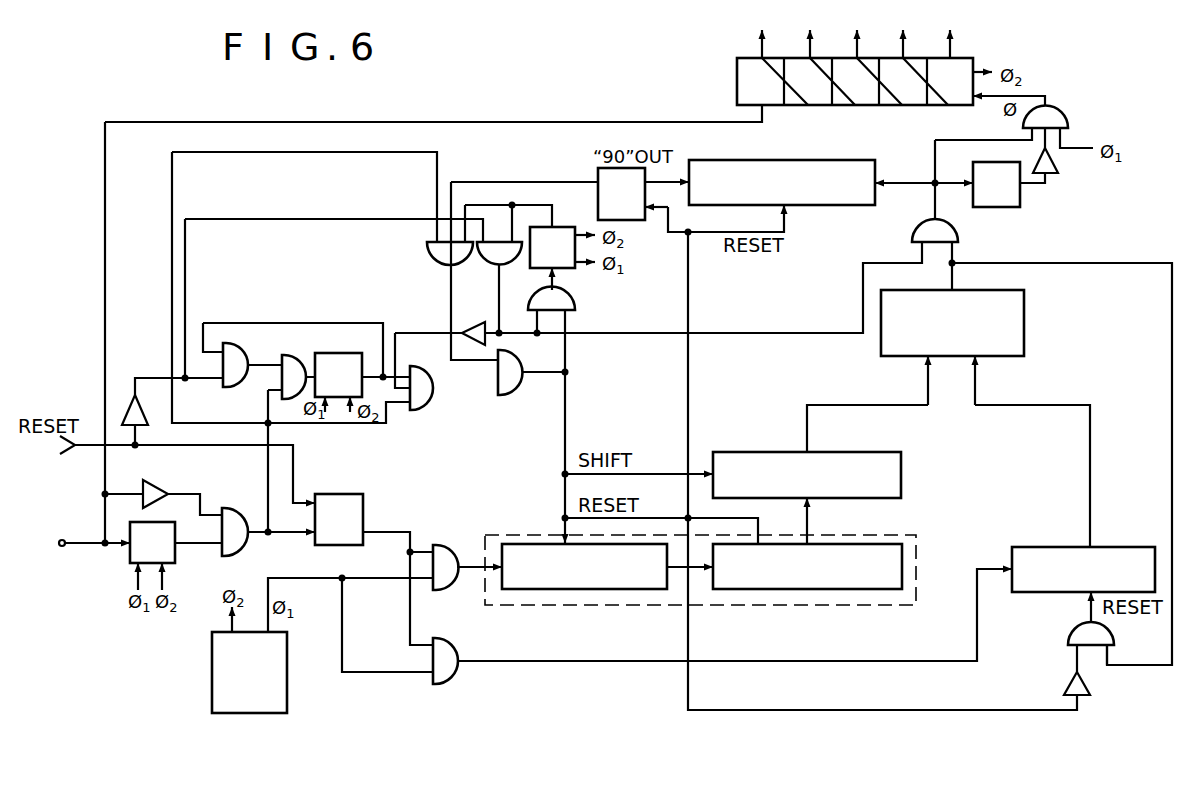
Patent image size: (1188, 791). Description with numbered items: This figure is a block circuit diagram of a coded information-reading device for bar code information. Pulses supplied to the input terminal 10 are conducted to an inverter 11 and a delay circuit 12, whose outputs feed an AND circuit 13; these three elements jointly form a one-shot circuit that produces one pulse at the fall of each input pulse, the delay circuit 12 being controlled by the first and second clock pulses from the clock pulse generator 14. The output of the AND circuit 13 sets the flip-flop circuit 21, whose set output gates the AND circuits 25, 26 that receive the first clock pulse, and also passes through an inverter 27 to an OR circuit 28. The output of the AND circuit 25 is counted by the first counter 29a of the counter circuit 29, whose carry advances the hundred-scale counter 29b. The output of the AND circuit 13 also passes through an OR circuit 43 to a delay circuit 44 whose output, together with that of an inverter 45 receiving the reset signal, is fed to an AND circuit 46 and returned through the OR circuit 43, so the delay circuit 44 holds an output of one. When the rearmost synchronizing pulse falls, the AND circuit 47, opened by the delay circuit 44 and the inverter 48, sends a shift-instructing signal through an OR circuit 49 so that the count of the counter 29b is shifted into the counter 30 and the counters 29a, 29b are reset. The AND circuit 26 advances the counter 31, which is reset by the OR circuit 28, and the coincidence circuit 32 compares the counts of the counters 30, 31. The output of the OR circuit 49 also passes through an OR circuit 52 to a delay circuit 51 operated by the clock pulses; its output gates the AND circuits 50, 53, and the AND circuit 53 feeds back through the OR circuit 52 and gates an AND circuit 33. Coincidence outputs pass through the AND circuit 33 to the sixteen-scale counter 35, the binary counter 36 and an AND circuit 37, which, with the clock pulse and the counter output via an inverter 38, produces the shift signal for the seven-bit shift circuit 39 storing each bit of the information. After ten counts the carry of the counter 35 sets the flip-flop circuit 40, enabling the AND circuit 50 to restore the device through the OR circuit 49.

The input terminal 10 is at (58, 543).
The inverter 11 is at (155, 486).
The delay circuit 12 is at (175, 558).
The AND circuit 13 is at (238, 512).
The clock pulse generator 14 is at (287, 668).
The flip-flop circuit 21 is at (358, 495).
The AND circuit 25 is at (447, 553).
The AND circuit 26 is at (452, 648).
The inverter 27 is at (1090, 684).
The OR circuit 28 is at (1070, 633).
The counter circuit 29 is at (712, 622).
The first counter 29a is at (642, 589).
The 100-scale counter 29b is at (888, 589).
The 100-scale counter 30 is at (901, 477).
The 100-scale counter 31 is at (1045, 547).
The coincidence circuit 32 is at (1024, 333).
The AND circuit 33 is at (928, 223).
The 16-scale counter 35 is at (835, 154).
The binary counter 36 is at (1000, 207).
The AND circuit 37 is at (1060, 114).
The inverter 38 is at (1058, 167).
The 7-bit shift circuit 39 is at (880, 105).
The flip-flop circuit 40 is at (598, 173).
The OR circuit 43 is at (292, 358).
The delay circuit 44 is at (348, 357).
The inverter 45 is at (141, 403).
The AND circuit 46 is at (245, 358).
The AND circuit 47 is at (430, 400).
The inverter 48 is at (477, 329).
The OR circuit 49 is at (523, 389).
The AND circuit 50 is at (441, 265).
The delay circuit 51 is at (565, 227).
The OR circuit 52 is at (572, 297).
The AND circuit 53 is at (494, 265).